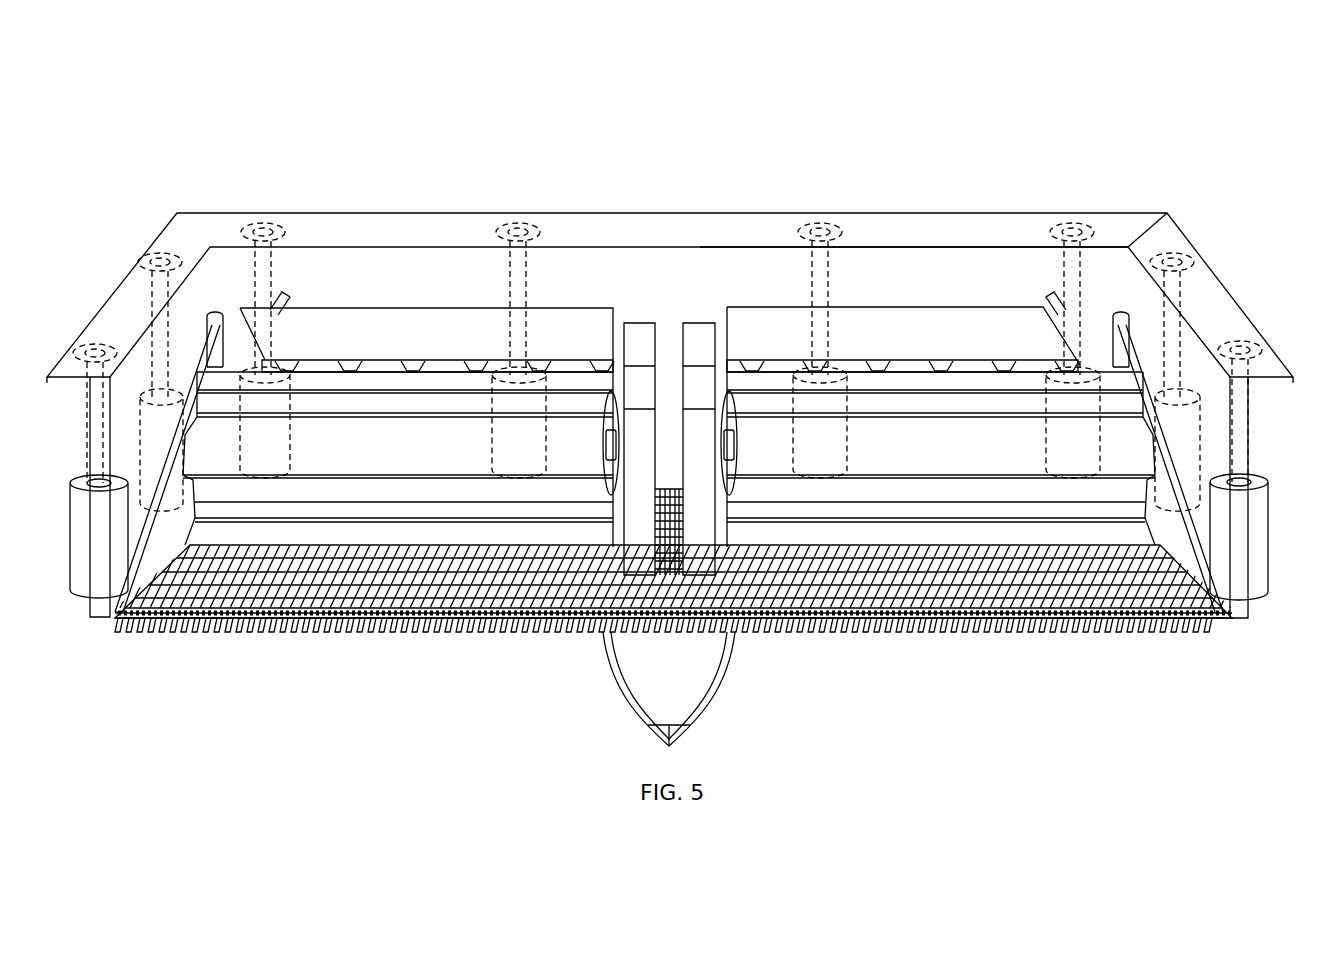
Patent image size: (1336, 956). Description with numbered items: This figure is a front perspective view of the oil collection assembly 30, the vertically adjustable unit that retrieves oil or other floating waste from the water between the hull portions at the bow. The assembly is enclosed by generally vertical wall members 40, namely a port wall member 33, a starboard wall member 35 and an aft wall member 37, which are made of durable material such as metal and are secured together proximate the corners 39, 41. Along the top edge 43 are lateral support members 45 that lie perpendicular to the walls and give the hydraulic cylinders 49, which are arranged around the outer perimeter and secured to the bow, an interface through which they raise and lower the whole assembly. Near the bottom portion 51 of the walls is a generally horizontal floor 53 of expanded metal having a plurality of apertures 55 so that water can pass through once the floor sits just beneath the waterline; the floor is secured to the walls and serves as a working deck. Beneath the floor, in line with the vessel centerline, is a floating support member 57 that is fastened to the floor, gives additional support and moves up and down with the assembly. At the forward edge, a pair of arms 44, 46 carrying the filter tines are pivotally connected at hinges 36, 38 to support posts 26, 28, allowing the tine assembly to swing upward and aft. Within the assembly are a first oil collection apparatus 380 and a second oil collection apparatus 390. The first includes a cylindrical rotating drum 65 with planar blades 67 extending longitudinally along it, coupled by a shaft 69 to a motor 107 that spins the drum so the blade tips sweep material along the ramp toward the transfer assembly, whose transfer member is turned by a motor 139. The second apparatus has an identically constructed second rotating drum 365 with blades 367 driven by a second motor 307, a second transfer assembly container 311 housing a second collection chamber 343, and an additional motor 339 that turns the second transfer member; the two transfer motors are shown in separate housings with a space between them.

The oil collection assembly 30 is at (1212, 100).
The first oil collection apparatus 380 is at (390, 266).
The second oil collection apparatus 390 is at (908, 258).
The wall members 40 is at (583, 262).
The lateral support members 45 is at (867, 222).
The corner 41 is at (1130, 245).
The aft wall member 37 is at (778, 272).
The top edge 43 is at (947, 248).
The motor 139 is at (640, 340).
The additional motor 339 is at (708, 325).
The motor 107 is at (637, 522).
The second motor 307 is at (703, 540).
The second transfer assembly container 311 is at (980, 327).
The support post 26 is at (1113, 325).
The hinge 36 is at (1120, 312).
The hinge 38 is at (215, 313).
The support post 28 is at (228, 325).
The corner 39 is at (193, 405).
The arm 46 is at (182, 432).
The arm 44 is at (1155, 520).
The starboard wall member 35 is at (128, 450).
The port wall member 33 is at (1213, 458).
The hydraulic cylinder 49 is at (92, 597).
The rotating drum 65 is at (349, 457).
The blade 67 is at (278, 512).
The shaft 69 is at (600, 452).
The second rotating drum 365 is at (1100, 460).
The blade 367 is at (1022, 510).
The second collection chamber 343 is at (1140, 400).
The aperture 55 is at (828, 592).
The floor 53 is at (905, 600).
The bottom portion 51 is at (152, 597).
The floating support member 57 is at (688, 692).